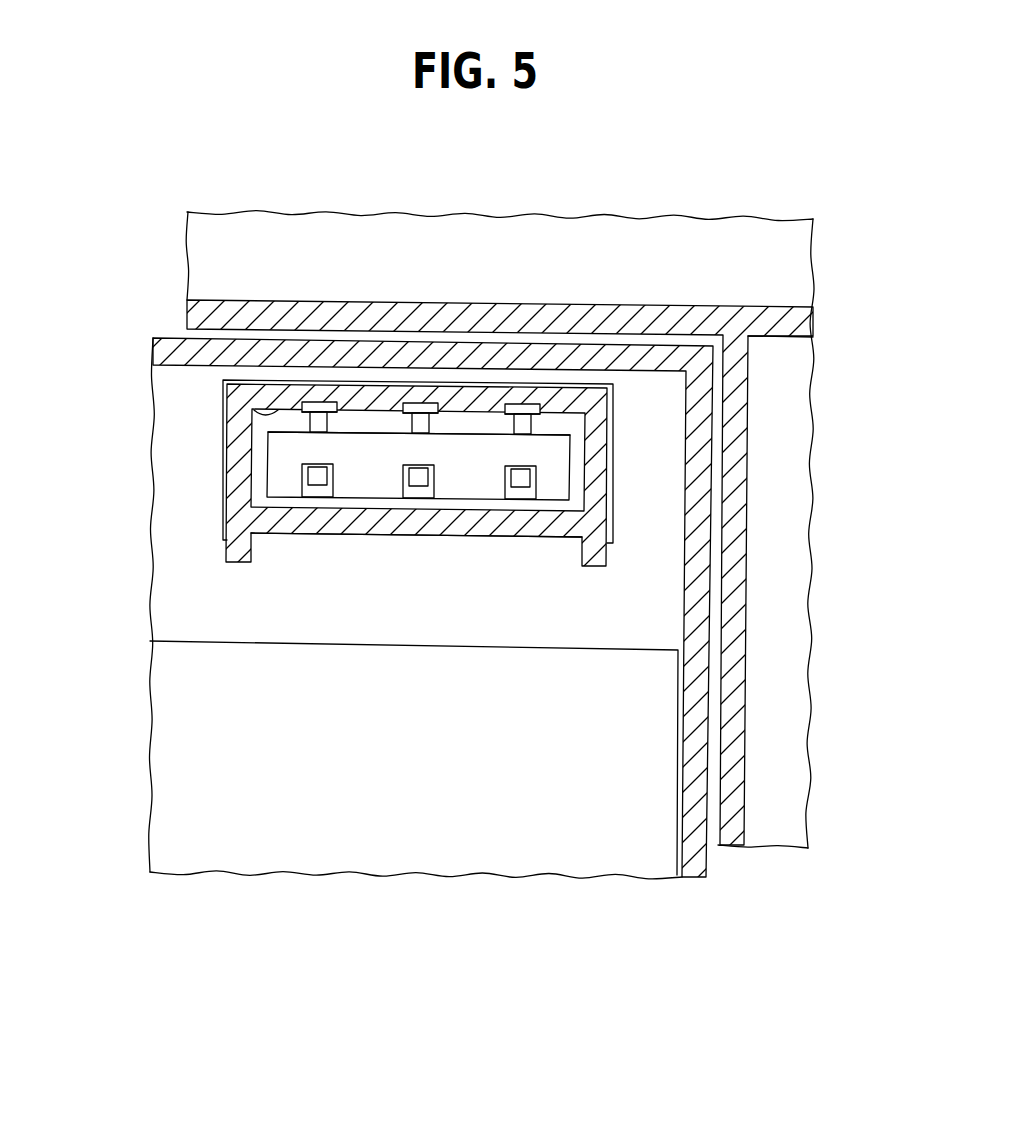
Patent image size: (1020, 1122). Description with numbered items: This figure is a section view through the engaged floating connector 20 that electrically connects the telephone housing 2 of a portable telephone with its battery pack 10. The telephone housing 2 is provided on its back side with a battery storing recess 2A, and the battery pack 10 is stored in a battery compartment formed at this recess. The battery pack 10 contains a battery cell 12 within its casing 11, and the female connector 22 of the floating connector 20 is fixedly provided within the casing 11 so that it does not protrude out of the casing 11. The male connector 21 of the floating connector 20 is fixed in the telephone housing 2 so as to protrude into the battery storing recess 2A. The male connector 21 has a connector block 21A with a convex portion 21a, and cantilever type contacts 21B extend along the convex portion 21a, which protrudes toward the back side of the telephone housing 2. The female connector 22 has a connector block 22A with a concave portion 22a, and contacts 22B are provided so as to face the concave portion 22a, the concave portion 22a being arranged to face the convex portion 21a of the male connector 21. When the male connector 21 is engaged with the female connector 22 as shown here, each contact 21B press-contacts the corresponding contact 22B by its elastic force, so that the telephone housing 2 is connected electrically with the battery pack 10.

The telephone housing 2 is at (737, 220).
The battery storing recess 2A is at (713, 843).
The battery pack 10 is at (245, 868).
The casing 11 is at (177, 350).
The battery cell 12 is at (433, 779).
The floating connector 20 is at (633, 443).
The male connector 21 is at (268, 477).
The convex portion 21a is at (283, 453).
The connector block 21A is at (565, 468).
The cantilever type contacts 21B is at (325, 428).
The female connector 22 is at (223, 547).
The concave portion 22a is at (262, 414).
The connector block 22A is at (592, 518).
The contacts 22B is at (520, 410).